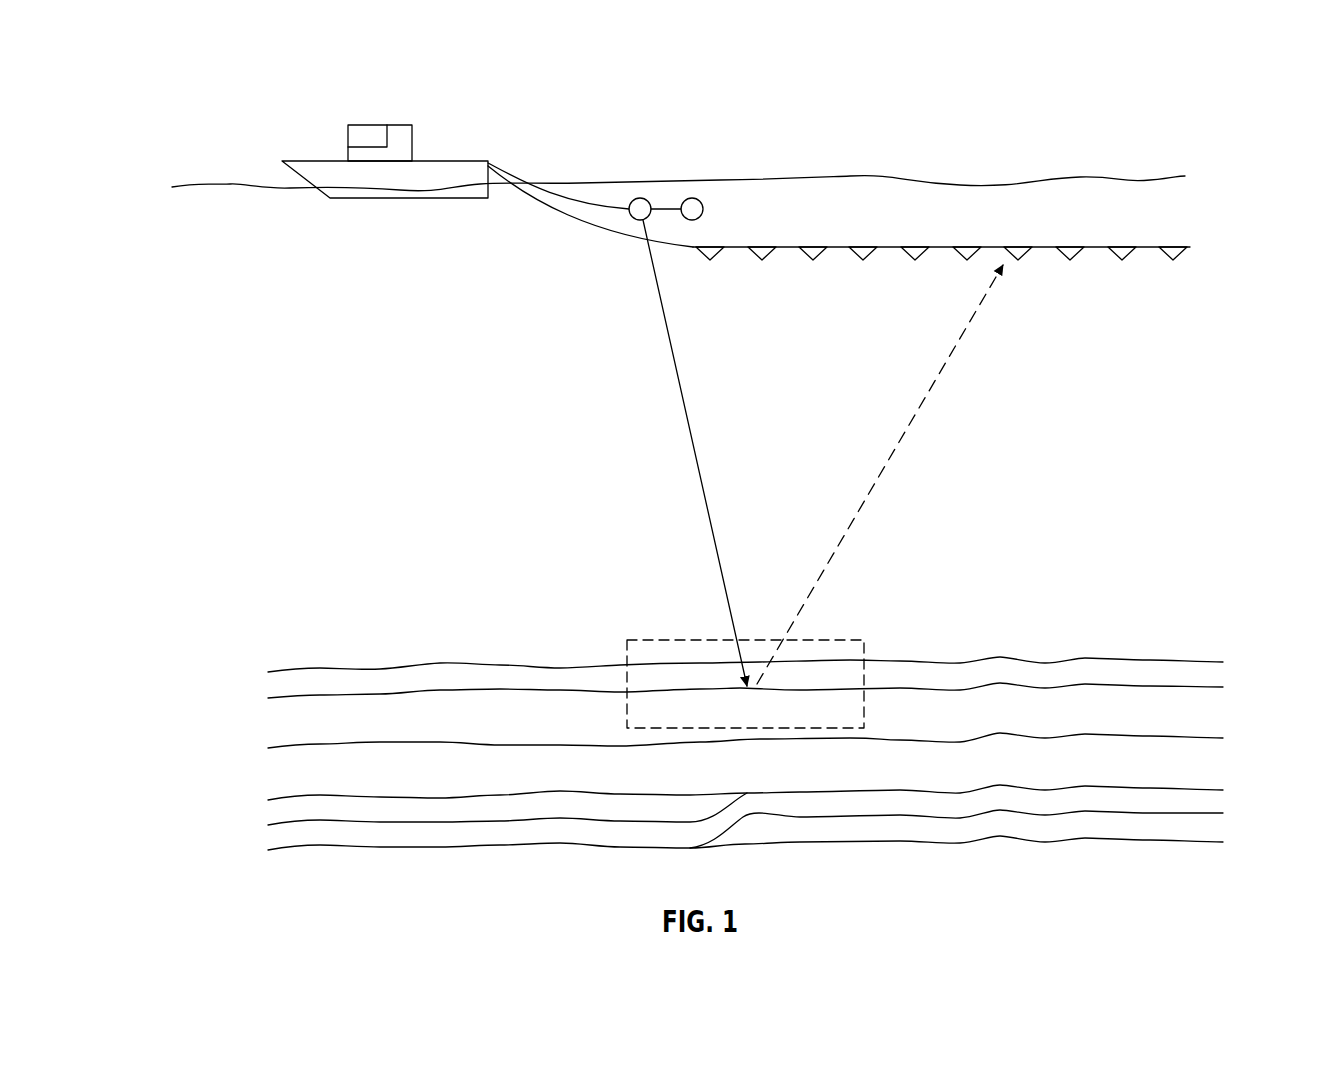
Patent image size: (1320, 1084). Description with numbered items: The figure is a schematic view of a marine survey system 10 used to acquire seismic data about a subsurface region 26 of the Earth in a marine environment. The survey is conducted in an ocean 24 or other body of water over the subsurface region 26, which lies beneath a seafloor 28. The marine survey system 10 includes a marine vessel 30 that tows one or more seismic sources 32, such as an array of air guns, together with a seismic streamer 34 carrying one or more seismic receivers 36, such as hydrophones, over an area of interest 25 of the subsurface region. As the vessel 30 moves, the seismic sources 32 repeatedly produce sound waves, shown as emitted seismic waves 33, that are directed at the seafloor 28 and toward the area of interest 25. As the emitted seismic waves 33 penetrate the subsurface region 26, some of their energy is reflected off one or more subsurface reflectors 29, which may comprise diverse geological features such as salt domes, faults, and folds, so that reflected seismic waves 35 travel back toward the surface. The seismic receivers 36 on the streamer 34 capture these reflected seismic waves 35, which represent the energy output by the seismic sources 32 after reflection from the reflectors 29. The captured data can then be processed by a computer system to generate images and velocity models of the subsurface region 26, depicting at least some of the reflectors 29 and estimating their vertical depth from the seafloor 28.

The marine survey system 10 is at (1166, 92).
The ocean 24 is at (586, 453).
The area of interest 25 is at (870, 697).
The subsurface region 26 is at (252, 655).
The seafloor 28 is at (440, 662).
The subsurface reflectors 29 is at (297, 690).
The marine vessel 30 is at (395, 125).
The seismic sources 32 is at (641, 198).
The emitted seismic waves 33 is at (670, 357).
The seismic streamer 34 is at (1187, 210).
The reflected seismic waves 35 is at (930, 386).
The seismic receivers 36 is at (762, 245).